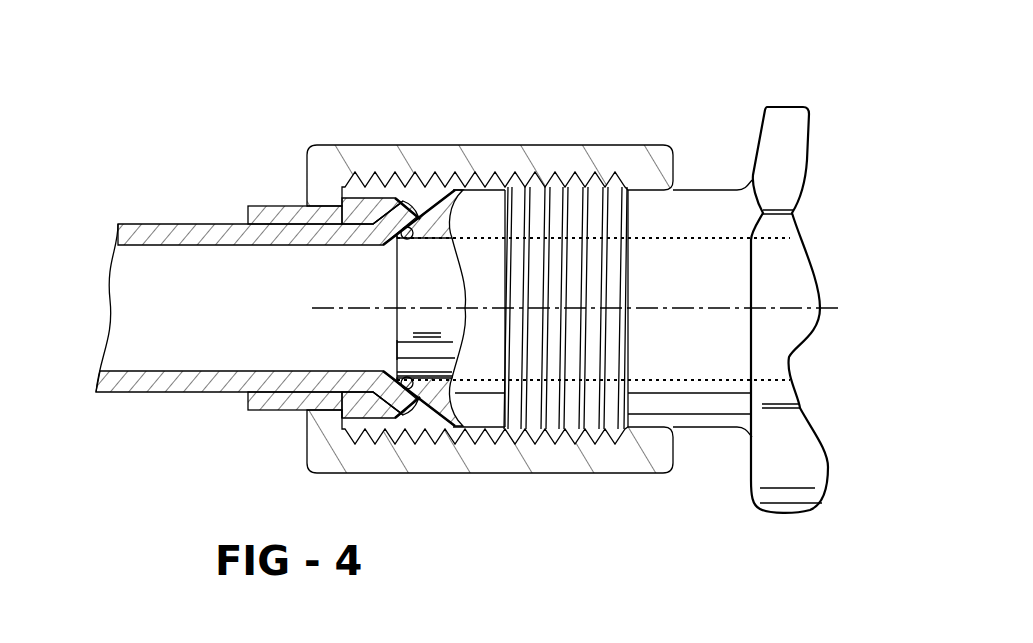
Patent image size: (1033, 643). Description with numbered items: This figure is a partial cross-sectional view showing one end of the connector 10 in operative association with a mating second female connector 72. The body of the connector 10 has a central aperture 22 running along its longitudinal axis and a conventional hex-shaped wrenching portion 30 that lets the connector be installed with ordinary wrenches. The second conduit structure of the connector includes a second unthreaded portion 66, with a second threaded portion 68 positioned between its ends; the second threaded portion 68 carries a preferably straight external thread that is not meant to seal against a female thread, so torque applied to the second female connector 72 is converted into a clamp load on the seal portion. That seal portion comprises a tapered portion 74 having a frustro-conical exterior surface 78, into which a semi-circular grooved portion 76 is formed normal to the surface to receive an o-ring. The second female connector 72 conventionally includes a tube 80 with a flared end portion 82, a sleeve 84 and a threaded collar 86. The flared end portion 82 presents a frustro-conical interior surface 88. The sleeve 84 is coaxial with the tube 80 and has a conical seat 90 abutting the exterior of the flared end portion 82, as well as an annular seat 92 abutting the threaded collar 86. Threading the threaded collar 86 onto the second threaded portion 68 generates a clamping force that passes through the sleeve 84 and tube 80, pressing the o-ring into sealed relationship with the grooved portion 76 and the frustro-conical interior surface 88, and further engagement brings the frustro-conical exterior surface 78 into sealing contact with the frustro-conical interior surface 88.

The connector 10 is at (828, 181).
The central aperture 22 is at (427, 321).
The hex-shaped wrenching portion 30 is at (798, 168).
The second unthreaded portion 66 is at (710, 212).
The second threaded portion 68 is at (587, 297).
The second female connector 72 is at (477, 140).
The tapered portion 74 is at (419, 193).
The grooved portion 76 is at (401, 243).
The frustro-conical exterior surface 78 is at (423, 217).
The tube 80 is at (140, 233).
The flared end portion 82 is at (382, 254).
The sleeve 84 is at (258, 205).
The threaded collar 86 is at (558, 153).
The frustro-conical interior surface 88 is at (397, 348).
The conical seat 90 is at (400, 418).
The annular seat 92 is at (340, 426).